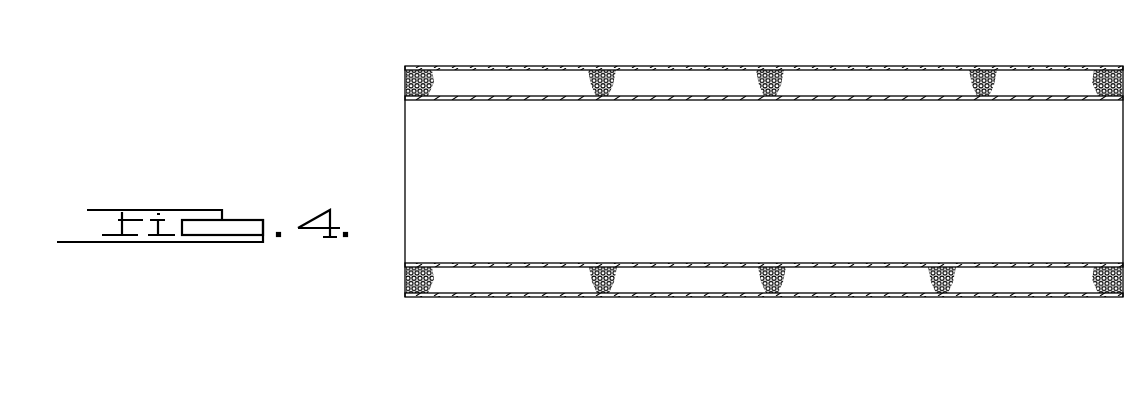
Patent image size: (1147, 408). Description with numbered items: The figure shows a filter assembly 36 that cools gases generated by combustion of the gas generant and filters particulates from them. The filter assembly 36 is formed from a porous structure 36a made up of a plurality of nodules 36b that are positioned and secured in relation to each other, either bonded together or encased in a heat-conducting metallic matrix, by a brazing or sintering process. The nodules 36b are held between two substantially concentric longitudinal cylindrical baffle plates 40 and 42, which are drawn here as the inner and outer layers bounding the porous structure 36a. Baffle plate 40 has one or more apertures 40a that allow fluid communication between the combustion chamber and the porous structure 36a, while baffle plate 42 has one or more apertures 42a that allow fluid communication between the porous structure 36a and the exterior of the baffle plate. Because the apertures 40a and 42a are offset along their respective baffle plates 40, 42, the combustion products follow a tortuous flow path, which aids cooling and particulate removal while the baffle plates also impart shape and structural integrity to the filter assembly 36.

The filter assembly 36 is at (745, 341).
The porous structure 36a is at (830, 72).
The nodules 36b is at (983, 68).
The baffle plate 40 is at (477, 100).
The apertures 40a is at (521, 266).
The baffle plate 42 is at (487, 66).
The apertures 42a is at (1057, 284).